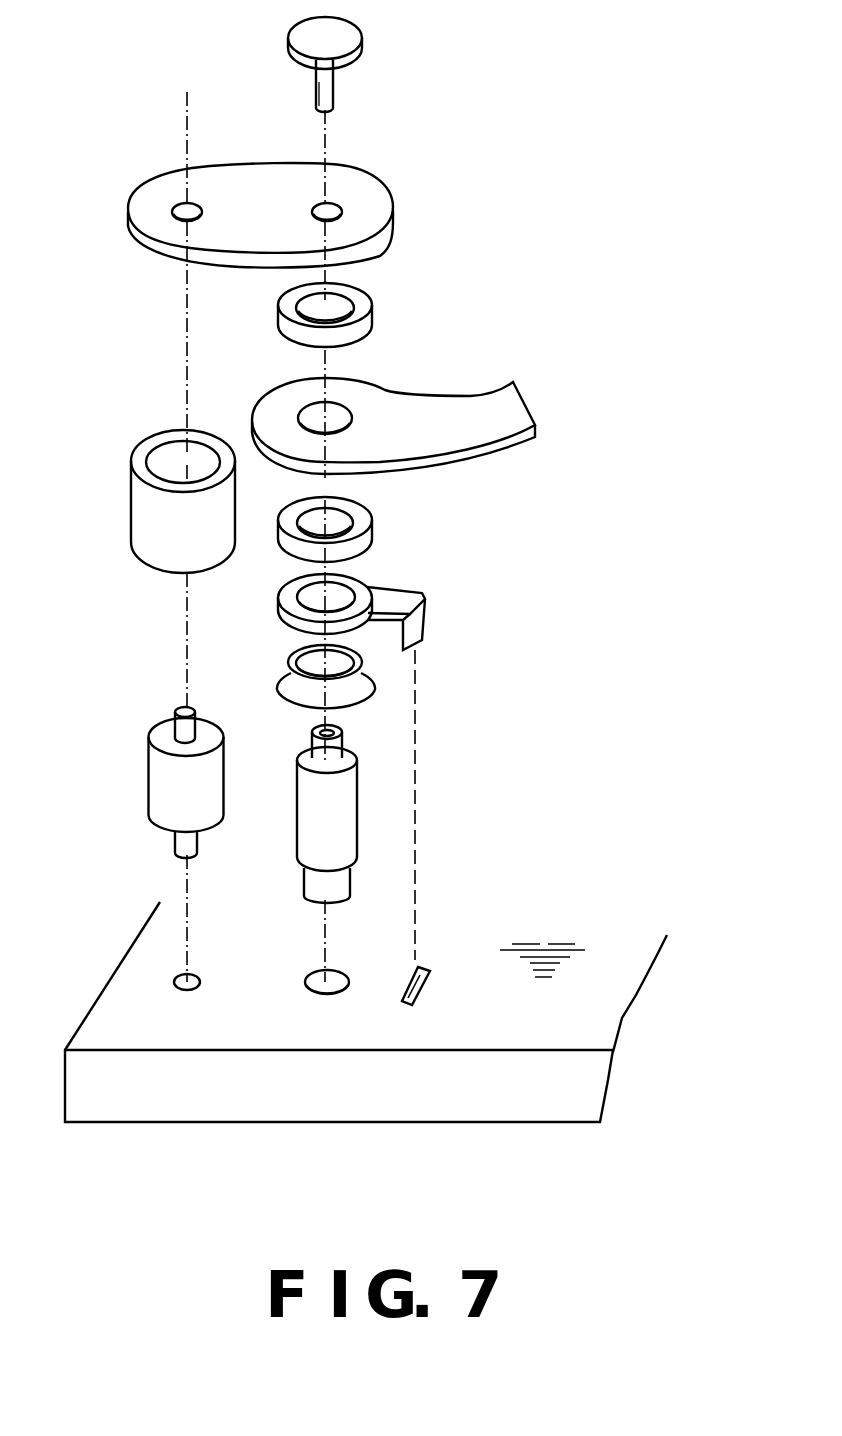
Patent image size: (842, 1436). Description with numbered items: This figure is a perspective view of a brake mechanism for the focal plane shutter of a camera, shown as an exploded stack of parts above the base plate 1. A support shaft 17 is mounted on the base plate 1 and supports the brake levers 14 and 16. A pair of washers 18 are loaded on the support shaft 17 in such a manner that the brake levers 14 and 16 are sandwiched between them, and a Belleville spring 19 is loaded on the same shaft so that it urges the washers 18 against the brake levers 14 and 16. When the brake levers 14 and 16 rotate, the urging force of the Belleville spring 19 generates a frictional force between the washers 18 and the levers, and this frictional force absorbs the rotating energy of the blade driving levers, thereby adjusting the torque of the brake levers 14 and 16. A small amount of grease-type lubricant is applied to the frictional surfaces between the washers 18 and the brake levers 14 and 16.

The base plate 1 is at (547, 945).
The brake lever 14 is at (478, 420).
The brake lever 16 is at (510, 407).
The support shaft 17 is at (345, 806).
The washer 18 is at (372, 308).
The Belleville spring 19 is at (362, 676).